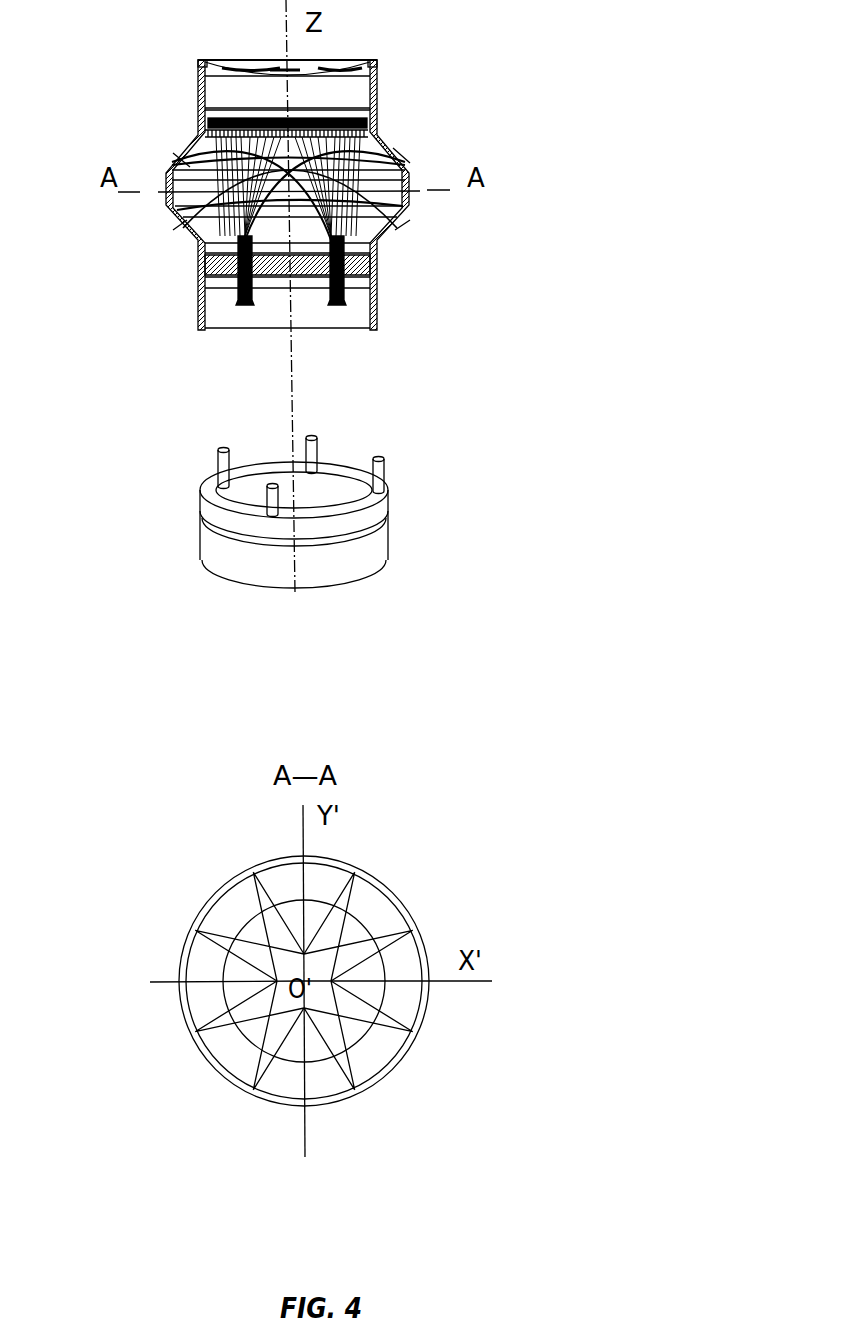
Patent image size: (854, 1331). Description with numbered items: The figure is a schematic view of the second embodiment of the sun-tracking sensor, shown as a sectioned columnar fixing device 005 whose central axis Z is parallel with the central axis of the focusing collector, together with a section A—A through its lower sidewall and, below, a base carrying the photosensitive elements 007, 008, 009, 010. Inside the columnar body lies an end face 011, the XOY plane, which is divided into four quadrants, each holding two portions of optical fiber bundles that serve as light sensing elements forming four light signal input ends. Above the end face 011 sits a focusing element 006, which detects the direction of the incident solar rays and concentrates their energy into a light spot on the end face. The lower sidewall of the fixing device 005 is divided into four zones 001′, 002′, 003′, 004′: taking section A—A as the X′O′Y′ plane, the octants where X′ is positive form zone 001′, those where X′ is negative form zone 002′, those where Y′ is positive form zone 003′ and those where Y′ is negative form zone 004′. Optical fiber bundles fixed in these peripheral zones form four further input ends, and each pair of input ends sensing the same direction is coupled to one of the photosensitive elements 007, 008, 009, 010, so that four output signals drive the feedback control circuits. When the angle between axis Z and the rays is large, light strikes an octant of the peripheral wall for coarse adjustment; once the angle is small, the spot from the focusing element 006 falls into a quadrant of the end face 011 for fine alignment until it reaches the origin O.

The fixing device 005 is at (407, 170).
The focusing element 006 is at (332, 60).
The end face 011 is at (197, 115).
The photosensitive element 007 is at (375, 475).
The photosensitive element 008 is at (222, 452).
The photosensitive element 009 is at (313, 455).
The photosensitive element 010 is at (270, 502).
The zone 001′ is at (403, 1006).
The zone 002′ is at (212, 1008).
The zone 003′ is at (273, 891).
The zone 004′ is at (318, 1094).